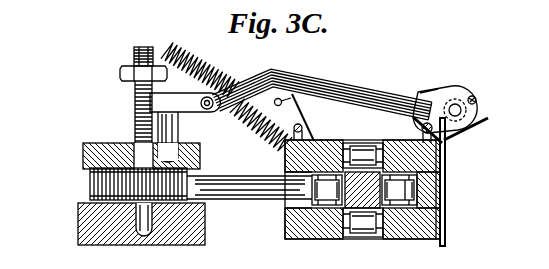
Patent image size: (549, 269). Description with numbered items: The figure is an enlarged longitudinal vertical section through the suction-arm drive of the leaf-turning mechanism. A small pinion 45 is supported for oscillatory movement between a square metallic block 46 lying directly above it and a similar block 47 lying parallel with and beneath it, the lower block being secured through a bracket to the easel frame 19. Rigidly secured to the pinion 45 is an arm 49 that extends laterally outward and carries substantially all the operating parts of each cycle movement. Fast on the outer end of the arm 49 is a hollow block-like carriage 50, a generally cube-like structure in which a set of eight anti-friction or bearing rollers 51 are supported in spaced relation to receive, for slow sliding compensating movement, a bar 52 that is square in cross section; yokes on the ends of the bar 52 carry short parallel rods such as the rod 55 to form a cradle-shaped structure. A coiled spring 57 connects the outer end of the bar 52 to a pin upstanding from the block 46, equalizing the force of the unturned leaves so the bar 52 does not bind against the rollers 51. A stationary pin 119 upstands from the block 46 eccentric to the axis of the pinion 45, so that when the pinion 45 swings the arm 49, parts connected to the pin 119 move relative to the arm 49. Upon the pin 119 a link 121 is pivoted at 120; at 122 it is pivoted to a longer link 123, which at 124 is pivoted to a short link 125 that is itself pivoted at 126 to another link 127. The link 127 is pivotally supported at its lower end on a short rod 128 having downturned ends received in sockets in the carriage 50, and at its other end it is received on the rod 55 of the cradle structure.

The frame 19 is at (535, 12).
The pinion 45 is at (98, 186).
The square metallic block 46 is at (86, 151).
The block 47 is at (92, 221).
The arm 49 is at (252, 176).
The hollow block-like carriage 50 is at (293, 94).
The anti-friction or bearing rollers 51 is at (365, 146).
The bar 52 is at (358, 196).
The rod 55 is at (477, 99).
The coiled spring 57 is at (199, 46).
The stationary pin 119 is at (168, 134).
The pivotal connection 120 is at (133, 99).
The link 121 is at (192, 110).
The pivotal connection 122 is at (214, 114).
The longer link 123 is at (372, 80).
The pivotal connection 124 is at (423, 97).
The short link 125 is at (439, 94).
The pivot 126 is at (476, 132).
The link 127 is at (487, 120).
The short rod 128 is at (447, 147).